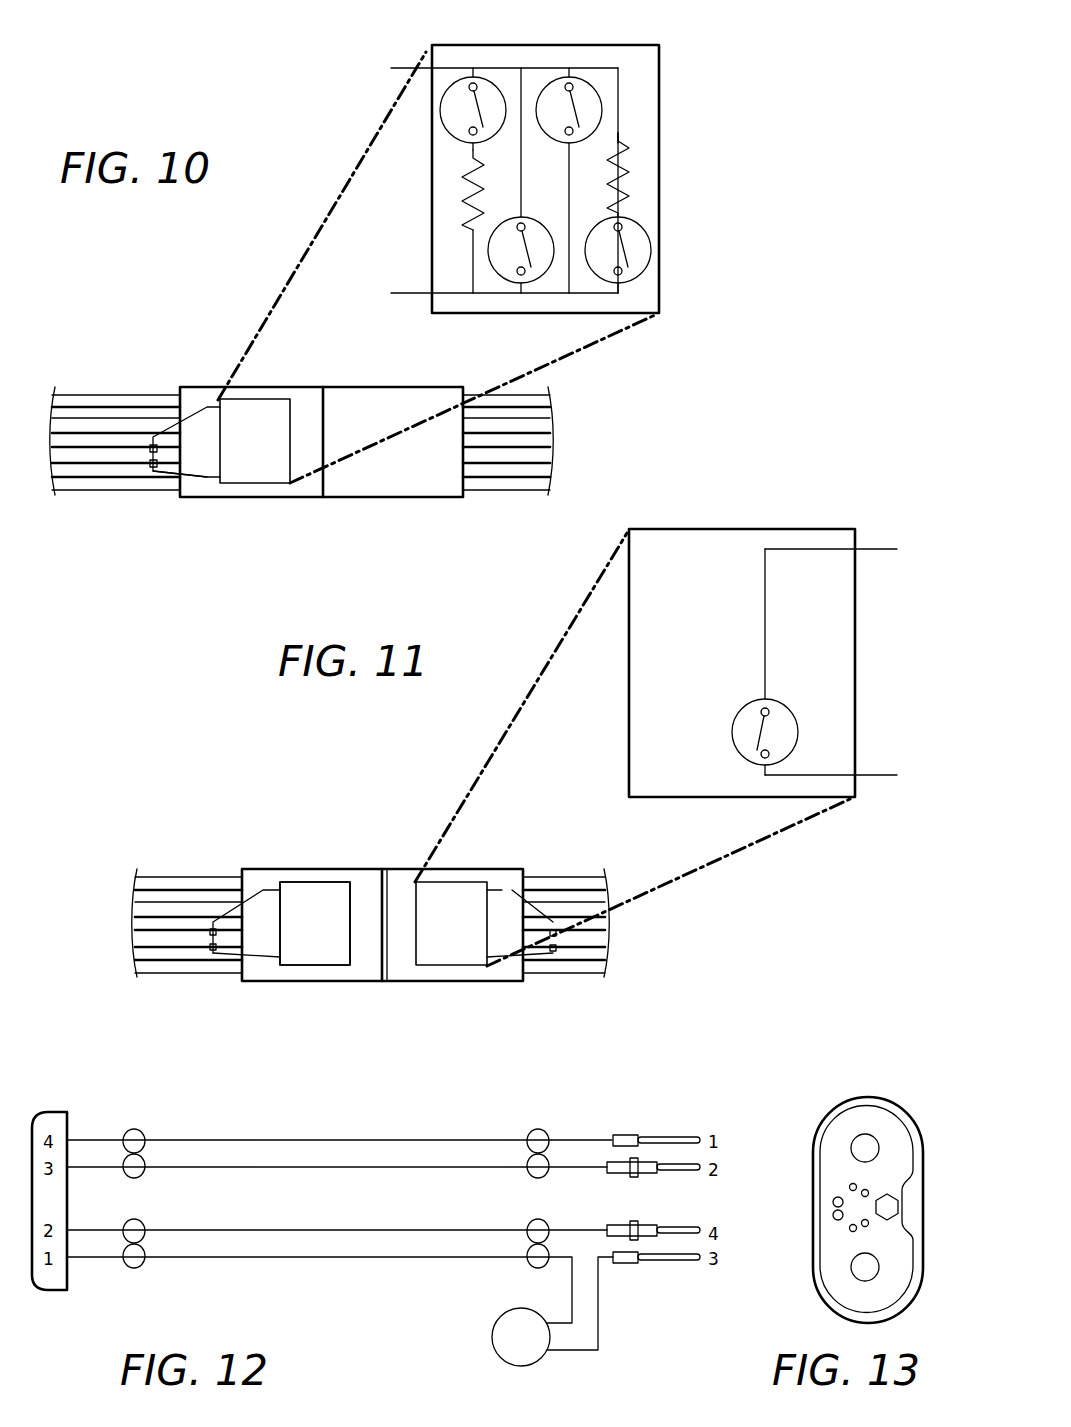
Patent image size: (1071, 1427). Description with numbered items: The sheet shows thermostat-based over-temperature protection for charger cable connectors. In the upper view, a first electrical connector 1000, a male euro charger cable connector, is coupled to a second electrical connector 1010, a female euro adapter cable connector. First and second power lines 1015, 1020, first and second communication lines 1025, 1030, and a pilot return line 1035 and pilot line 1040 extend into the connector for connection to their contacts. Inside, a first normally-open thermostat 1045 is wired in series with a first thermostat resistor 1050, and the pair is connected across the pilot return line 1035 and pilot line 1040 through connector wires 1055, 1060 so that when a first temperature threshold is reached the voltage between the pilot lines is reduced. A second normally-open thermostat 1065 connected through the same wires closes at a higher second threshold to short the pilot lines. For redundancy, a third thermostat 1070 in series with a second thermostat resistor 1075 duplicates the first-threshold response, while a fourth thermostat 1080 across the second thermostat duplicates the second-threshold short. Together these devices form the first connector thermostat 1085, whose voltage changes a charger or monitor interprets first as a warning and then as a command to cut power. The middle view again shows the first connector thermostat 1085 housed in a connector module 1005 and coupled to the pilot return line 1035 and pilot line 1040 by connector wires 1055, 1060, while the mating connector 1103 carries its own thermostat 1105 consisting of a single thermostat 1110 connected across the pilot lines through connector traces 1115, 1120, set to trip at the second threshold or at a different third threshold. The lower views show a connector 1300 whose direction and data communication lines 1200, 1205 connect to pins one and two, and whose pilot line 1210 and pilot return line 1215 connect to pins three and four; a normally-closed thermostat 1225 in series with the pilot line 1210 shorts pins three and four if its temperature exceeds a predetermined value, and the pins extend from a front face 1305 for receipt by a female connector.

In FIG. 10, the first electrical connector 1000 is at (280, 498).
In FIG. 11, the first connector module 1005 is at (298, 868).
In FIG. 10, the second electrical connector 1010 is at (388, 498).
In FIG. 10, the first power line 1015 is at (108, 396).
In FIG. 10, the second power line 1020 is at (95, 483).
In FIG. 10, the first communication line 1025 is at (152, 418).
In FIG. 10, the second communication line 1030 is at (88, 432).
In FIG. 10, the pilot return line 1035 is at (83, 450).
In FIG. 11, the pilot return line 1035 is at (158, 932).
In FIG. 10, the pilot line 1040 is at (130, 468).
In FIG. 11, the pilot line 1040 is at (188, 950).
In FIG. 10, the first normally-open thermostat 1045 is at (443, 132).
In FIG. 10, the first thermostat resistor 1050 is at (465, 180).
In FIG. 10, the connector wire 1055 is at (400, 67).
In FIG. 11, the connector wire 1055 is at (262, 891).
In FIG. 10, the connector wire 1060 is at (405, 295).
In FIG. 11, the connector wire 1060 is at (255, 958).
In FIG. 10, the second normally-open thermostat 1065 is at (497, 276).
In FIG. 10, the third thermostat 1070 is at (635, 226).
In FIG. 10, the second thermostat resistor 1075 is at (623, 145).
In FIG. 10, the fourth thermostat 1080 is at (601, 115).
In FIG. 10, the first connector thermostat 1085 is at (668, 288).
In FIG. 11, the first connector thermostat 1085 is at (338, 884).
In FIG. 11, the mating connector 1103 is at (398, 868).
In FIG. 11, the thermostat 1105 is at (430, 966).
In FIG. 11, the single thermostat 1110 is at (737, 752).
In FIG. 11, the connector trace 1115 is at (875, 548).
In FIG. 11, the connector trace 1120 is at (878, 777).
In FIG. 12, the direction communication line 1200 is at (300, 1138).
In FIG. 12, the data communication line 1205 is at (352, 1166).
In FIG. 12, the pilot line 1210 is at (302, 1258).
In FIG. 12, the pilot return line 1215 is at (352, 1232).
In FIG. 12, the normally-closed thermostat 1225 is at (493, 1345).
In FIG. 13, the connector 1300 is at (837, 1107).
In FIG. 13, the front face 1305 is at (855, 1290).